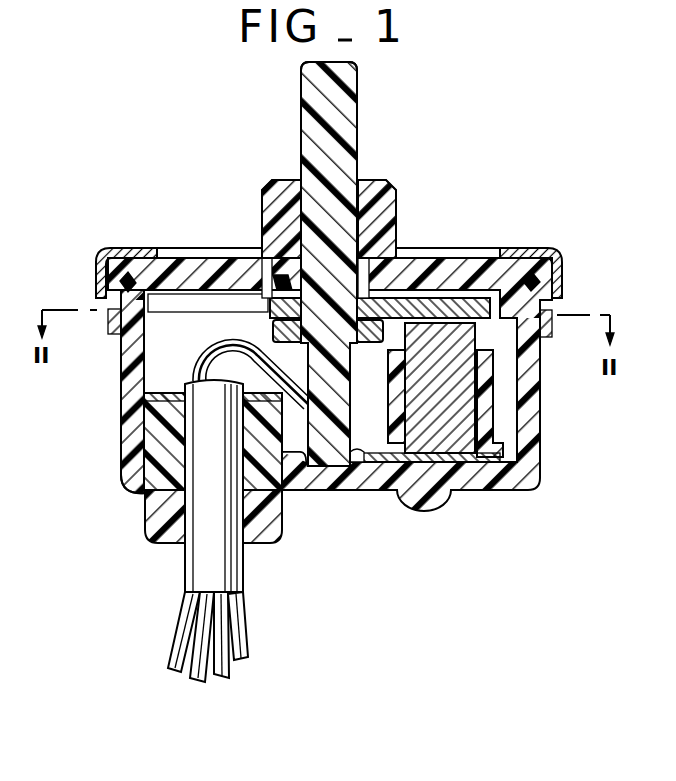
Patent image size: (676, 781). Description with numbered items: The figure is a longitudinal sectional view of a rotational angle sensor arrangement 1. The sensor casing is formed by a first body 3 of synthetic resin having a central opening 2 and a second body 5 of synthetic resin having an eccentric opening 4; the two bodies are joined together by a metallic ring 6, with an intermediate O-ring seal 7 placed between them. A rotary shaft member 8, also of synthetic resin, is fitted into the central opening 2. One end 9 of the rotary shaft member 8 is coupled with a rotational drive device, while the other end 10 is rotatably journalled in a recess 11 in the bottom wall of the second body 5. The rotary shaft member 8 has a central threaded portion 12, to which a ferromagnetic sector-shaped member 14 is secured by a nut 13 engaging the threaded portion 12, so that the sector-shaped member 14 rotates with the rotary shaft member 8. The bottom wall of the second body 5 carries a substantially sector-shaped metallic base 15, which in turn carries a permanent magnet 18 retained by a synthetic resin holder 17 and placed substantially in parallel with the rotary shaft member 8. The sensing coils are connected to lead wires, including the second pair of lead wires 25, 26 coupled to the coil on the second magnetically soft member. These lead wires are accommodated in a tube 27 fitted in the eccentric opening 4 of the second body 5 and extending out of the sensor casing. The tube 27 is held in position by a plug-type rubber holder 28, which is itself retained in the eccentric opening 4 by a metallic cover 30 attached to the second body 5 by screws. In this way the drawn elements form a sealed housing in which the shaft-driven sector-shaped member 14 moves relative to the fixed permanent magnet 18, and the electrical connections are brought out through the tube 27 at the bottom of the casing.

The rotational angle sensor arrangement 1 is at (319, 372).
The central opening 2 is at (355, 196).
The first body 3 is at (460, 266).
The eccentric opening 4 is at (182, 515).
The second body 5 is at (363, 474).
The metallic ring 6 is at (550, 258).
The O-ring seal 7 is at (128, 283).
The rotary shaft member 8 is at (358, 142).
The one end of rotary shaft member 9 is at (340, 97).
The other end of rotary shaft member 10 is at (340, 462).
The recess 11 is at (313, 470).
The central threaded portion 12 is at (358, 352).
The nut 13 is at (277, 330).
The sector-shaped member 14 is at (276, 290).
The metallic base 15 is at (473, 460).
The holder 17 is at (483, 412).
The permanent magnet 18 is at (477, 338).
The lead wire 25 is at (210, 368).
The lead wire 26 is at (213, 345).
The tube 27 is at (240, 568).
The plug-type rubber holder 28 is at (172, 447).
The metallic cover 30 is at (128, 386).